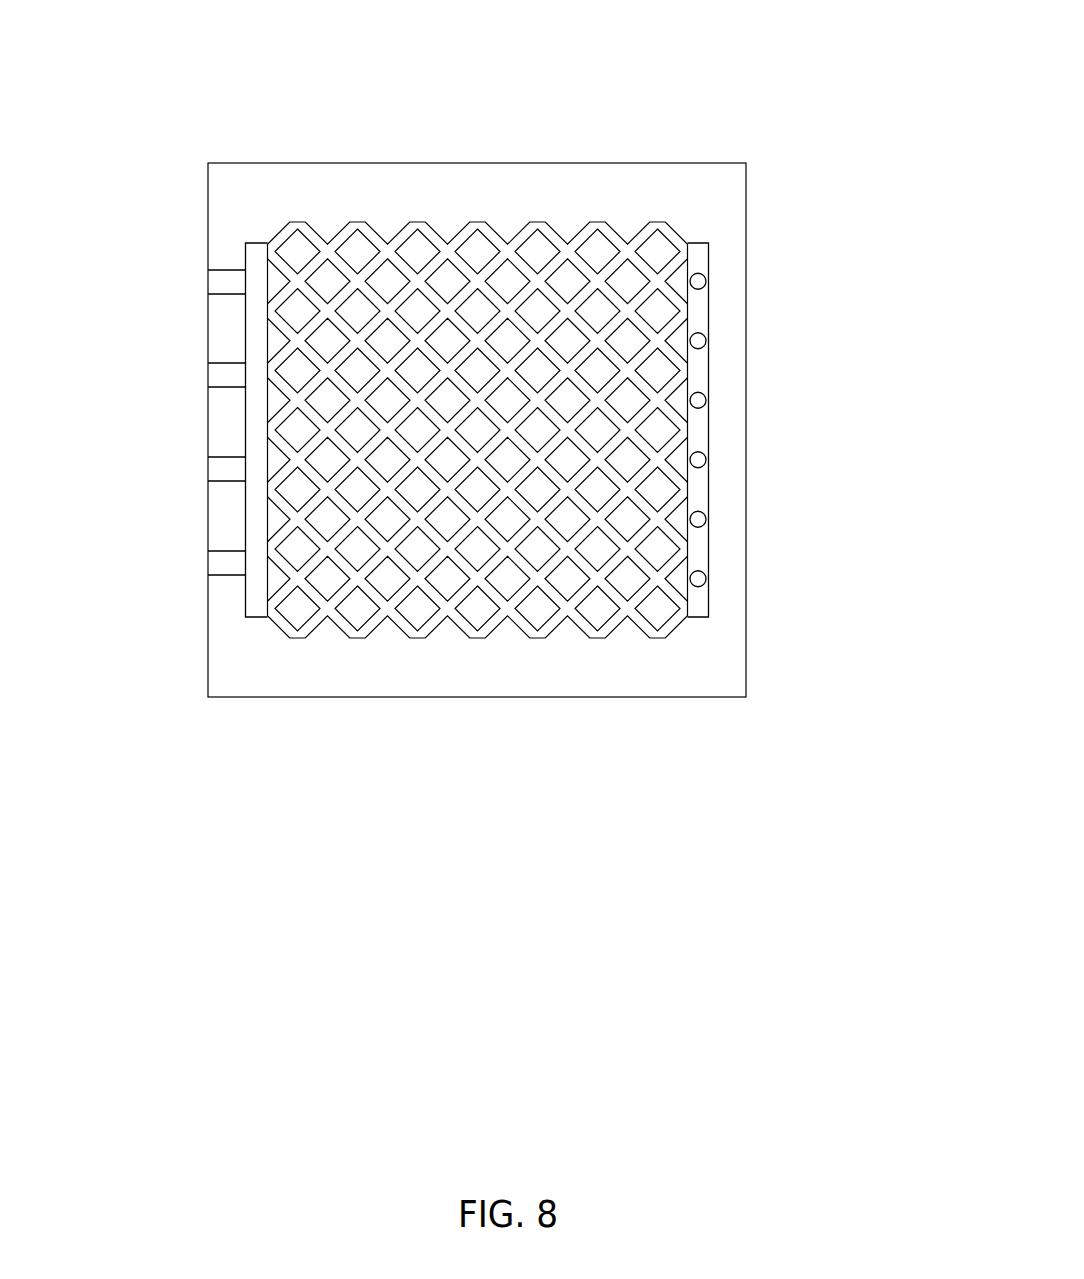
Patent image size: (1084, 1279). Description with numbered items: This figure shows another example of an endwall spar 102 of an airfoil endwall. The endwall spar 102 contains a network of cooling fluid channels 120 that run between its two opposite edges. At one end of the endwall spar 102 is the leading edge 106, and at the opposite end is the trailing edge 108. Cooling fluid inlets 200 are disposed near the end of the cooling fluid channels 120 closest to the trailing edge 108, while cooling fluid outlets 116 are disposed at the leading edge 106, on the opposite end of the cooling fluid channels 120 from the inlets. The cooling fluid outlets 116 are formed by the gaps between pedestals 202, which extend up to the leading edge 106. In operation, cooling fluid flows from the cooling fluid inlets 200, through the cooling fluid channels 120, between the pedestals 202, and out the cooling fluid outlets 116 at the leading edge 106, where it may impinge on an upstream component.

The endwall spar 102 is at (723, 201).
The leading edge 106 is at (208, 517).
The trailing edge 108 is at (710, 490).
The cooling fluid outlets 116 is at (222, 283).
The cooling fluid channels 120 is at (458, 443).
The cooling fluid inlets 200 is at (698, 398).
The pedestals 202 is at (228, 340).